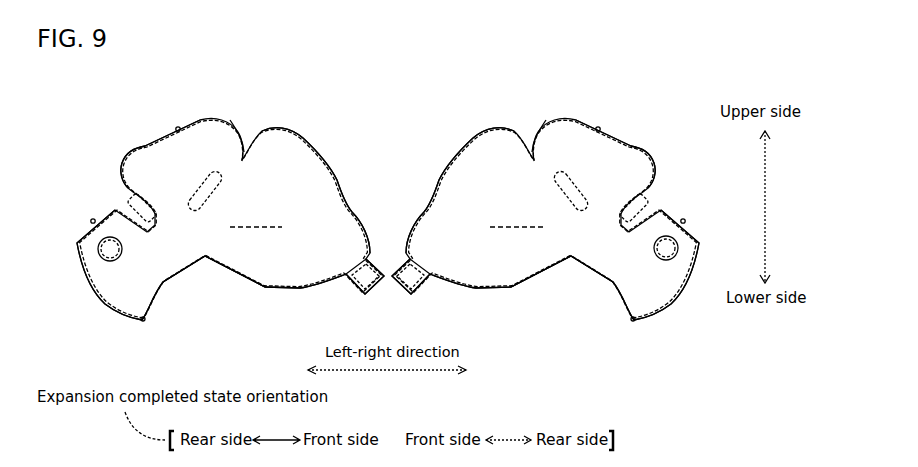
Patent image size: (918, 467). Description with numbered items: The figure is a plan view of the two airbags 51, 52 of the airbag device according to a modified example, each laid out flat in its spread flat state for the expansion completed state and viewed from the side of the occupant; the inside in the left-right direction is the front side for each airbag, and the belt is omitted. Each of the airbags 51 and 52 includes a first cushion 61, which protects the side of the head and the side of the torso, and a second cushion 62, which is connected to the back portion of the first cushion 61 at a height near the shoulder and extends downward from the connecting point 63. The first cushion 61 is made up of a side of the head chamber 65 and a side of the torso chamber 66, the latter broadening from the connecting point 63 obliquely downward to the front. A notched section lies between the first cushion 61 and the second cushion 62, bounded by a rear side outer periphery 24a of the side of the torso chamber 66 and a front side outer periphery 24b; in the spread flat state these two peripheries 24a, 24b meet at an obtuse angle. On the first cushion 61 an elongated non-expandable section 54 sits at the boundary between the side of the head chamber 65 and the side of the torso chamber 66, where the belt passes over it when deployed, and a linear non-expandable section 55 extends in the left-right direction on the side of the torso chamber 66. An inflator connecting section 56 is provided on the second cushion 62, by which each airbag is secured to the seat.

The airbag 51 is at (580, 112).
The airbag 52 is at (196, 117).
The non-expandable section 54 is at (197, 188).
The linear non-expandable section 55 is at (258, 227).
The inflator connecting section 56 is at (110, 236).
The first cushion 61 is at (140, 162).
The second cushion 62 is at (117, 288).
The connecting point 63 is at (167, 243).
The side of the head chamber 65 is at (221, 140).
The side of the torso chamber 66 is at (301, 280).
The rear side outer periphery 24a is at (231, 277).
The front side outer periphery 24b is at (173, 280).